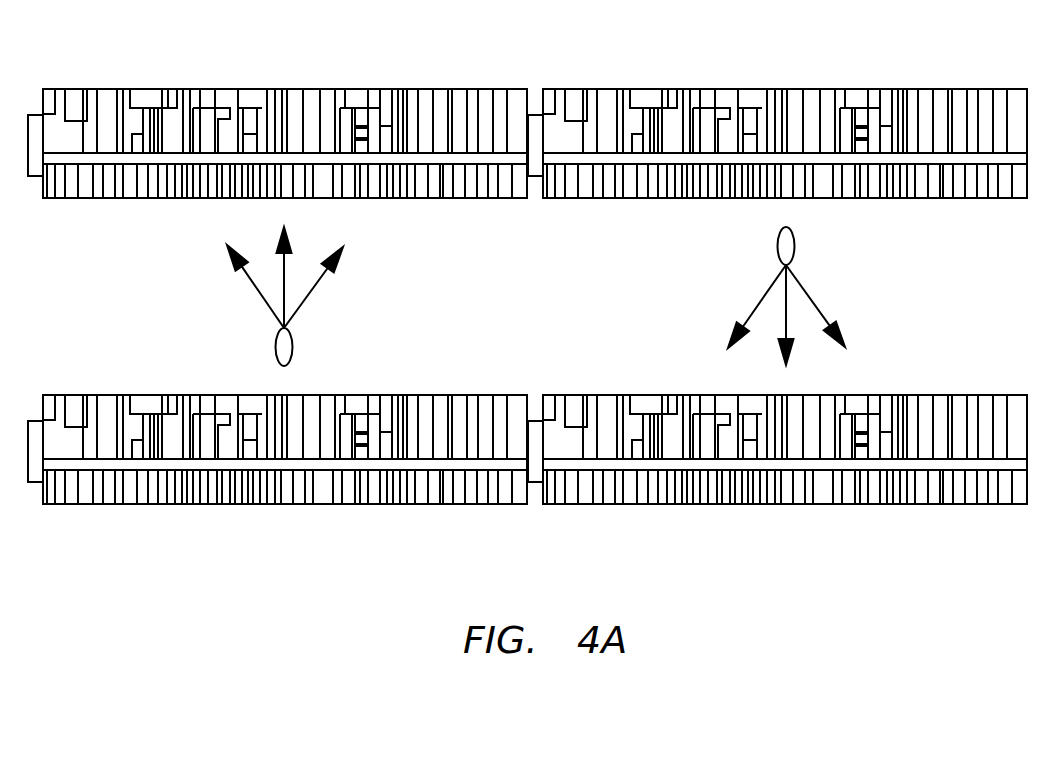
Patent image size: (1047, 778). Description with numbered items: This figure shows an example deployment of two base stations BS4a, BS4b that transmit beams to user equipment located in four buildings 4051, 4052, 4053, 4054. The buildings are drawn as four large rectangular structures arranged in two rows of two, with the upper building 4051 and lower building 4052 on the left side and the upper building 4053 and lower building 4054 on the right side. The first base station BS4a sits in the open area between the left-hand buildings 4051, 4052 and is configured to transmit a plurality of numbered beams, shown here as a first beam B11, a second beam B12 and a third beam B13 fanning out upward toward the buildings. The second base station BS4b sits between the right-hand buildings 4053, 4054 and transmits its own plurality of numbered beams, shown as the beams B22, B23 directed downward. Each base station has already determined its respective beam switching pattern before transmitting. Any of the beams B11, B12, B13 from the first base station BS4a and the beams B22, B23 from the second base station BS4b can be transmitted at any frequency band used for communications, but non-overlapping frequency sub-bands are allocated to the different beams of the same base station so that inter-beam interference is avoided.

The building 4051 is at (287, 89).
The building 4052 is at (283, 504).
The building 4053 is at (787, 89).
The building 4054 is at (783, 504).
The base station BS4a is at (293, 348).
The base station BS4b is at (795, 247).
The beam B11 is at (262, 295).
The beam B12 is at (287, 270).
The beam B13 is at (312, 298).
The beam B22 is at (787, 322).
The beam B23 is at (812, 298).